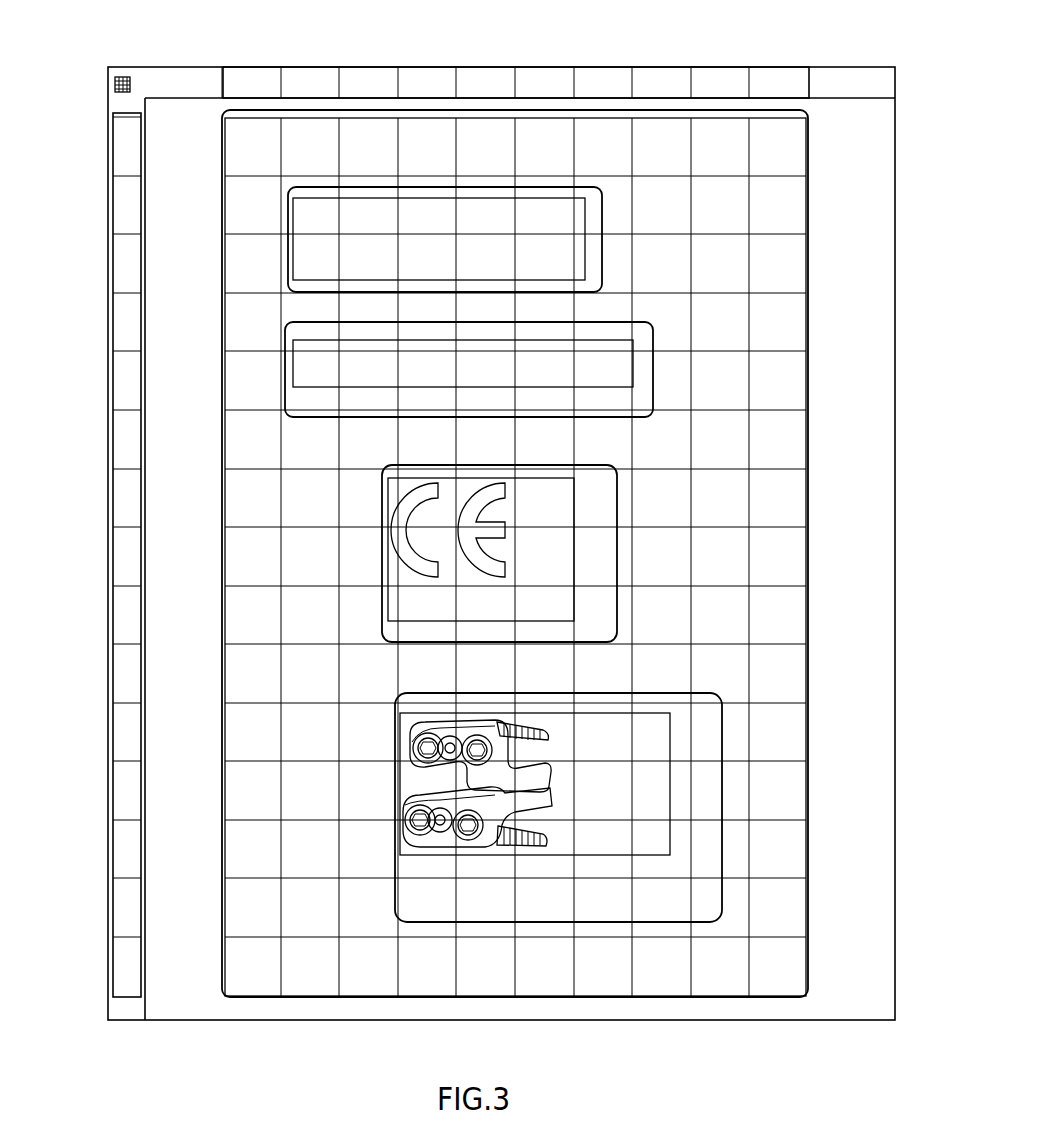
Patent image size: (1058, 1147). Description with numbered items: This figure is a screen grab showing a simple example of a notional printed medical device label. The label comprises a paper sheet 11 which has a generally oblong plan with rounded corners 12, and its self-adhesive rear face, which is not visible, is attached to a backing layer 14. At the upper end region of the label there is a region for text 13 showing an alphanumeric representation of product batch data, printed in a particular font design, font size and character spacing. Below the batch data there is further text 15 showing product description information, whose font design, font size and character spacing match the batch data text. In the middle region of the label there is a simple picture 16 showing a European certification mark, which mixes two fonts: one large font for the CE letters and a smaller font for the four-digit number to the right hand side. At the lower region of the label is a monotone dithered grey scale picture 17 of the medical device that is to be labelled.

The paper sheet 11 is at (780, 443).
The rounded corners 12 is at (808, 122).
The region for text 13 is at (417, 215).
The backing layer 14 is at (857, 300).
The further text 15 is at (382, 372).
The simple picture 16 is at (465, 572).
The monotone dithered grey scale picture 17 is at (553, 795).